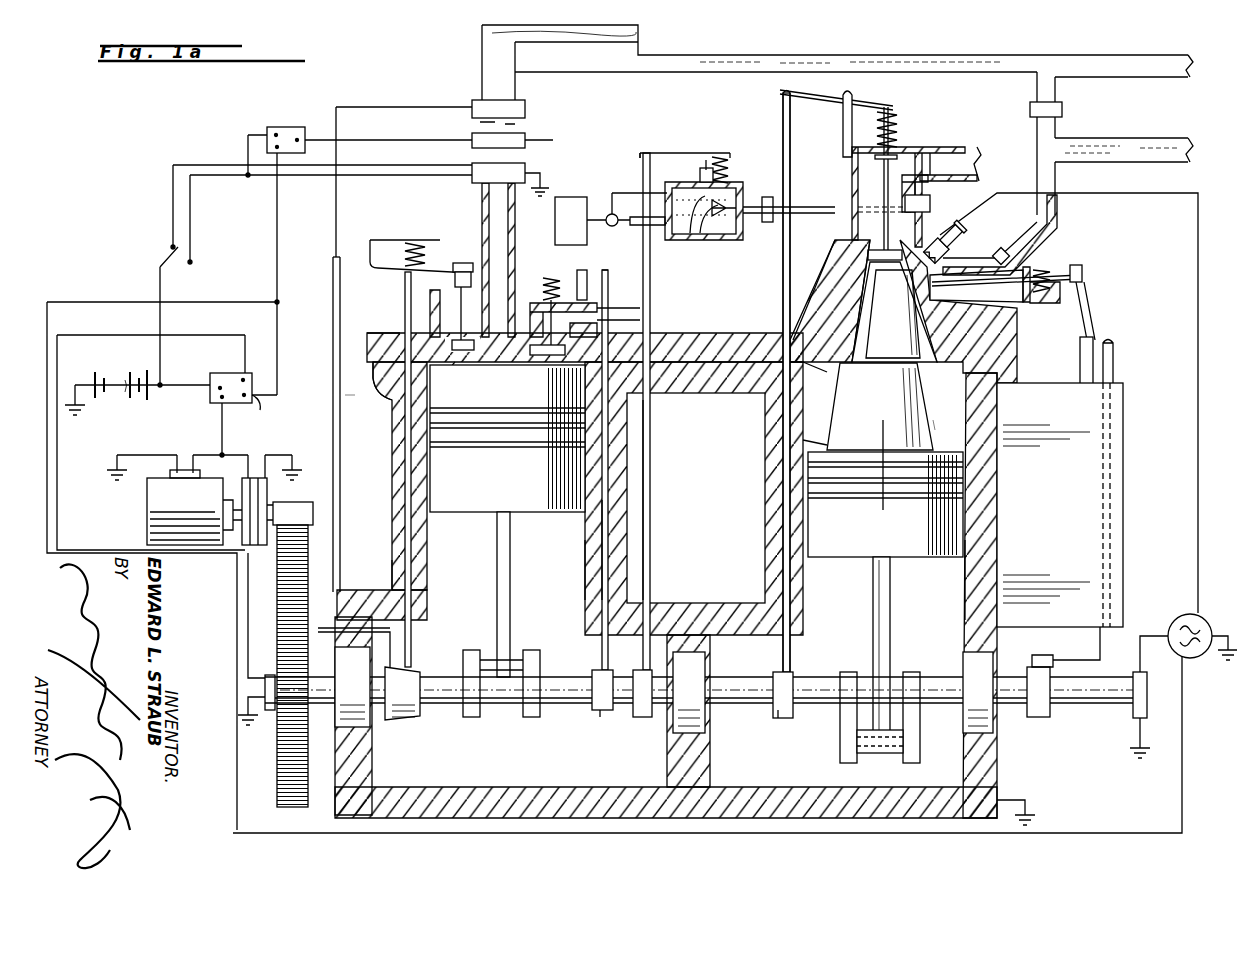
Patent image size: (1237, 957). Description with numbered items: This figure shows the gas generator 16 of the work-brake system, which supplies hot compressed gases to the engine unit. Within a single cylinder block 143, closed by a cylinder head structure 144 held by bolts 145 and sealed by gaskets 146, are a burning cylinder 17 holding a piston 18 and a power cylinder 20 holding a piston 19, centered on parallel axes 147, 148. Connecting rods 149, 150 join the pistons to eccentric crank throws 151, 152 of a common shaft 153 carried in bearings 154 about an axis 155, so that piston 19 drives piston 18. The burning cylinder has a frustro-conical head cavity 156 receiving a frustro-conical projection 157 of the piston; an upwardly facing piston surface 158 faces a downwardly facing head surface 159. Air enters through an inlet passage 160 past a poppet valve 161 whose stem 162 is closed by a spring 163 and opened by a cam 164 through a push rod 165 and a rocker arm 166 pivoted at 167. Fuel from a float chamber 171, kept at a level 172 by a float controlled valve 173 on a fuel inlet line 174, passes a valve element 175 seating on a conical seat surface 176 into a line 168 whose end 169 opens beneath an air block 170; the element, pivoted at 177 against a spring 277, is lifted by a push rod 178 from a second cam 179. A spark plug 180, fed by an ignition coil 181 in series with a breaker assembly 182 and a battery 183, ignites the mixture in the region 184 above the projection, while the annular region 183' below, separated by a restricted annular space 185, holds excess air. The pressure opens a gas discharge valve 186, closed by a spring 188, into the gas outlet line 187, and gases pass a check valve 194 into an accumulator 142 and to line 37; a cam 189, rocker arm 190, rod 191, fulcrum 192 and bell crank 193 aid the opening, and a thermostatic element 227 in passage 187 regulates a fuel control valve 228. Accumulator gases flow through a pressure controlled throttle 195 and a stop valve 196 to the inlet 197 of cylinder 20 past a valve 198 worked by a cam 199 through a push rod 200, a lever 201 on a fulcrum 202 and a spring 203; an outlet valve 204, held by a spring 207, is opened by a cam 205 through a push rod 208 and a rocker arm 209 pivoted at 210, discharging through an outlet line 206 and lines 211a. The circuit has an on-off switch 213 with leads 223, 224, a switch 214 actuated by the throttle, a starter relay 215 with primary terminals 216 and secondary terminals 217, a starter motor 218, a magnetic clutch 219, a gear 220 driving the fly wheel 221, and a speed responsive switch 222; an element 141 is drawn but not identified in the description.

The gas generator 16 is at (442, 76).
The burning cylinder 17 is at (962, 585).
The piston 18 is at (893, 544).
The piston 19 is at (517, 494).
The power cylinder 20 is at (583, 568).
The line 37 is at (1157, 140).
The air supply pipe 141 is at (1130, 78).
The accumulator 142 is at (640, 32).
The cylinder block 143 is at (392, 528).
The cylinder head structure 144 is at (372, 358).
The bolts 145 is at (367, 332).
The gaskets 146 is at (390, 385).
The axis 147 is at (883, 513).
The axis 148 is at (505, 399).
The connecting rod 149 is at (891, 616).
The connecting rod 150 is at (512, 617).
The eccentric crank throw 151 is at (876, 757).
The eccentric crank throw 152 is at (522, 655).
The common shaft 153 is at (575, 705).
The bearings 154 is at (380, 730).
The axis 155 is at (806, 720).
The head cavity 156 is at (838, 284).
The frustro-conical projection 157 is at (890, 405).
The annular upwardly facing surface 158 is at (828, 447).
The annular transverse head surface 159 is at (810, 388).
The inlet passage 160 is at (970, 158).
The poppet valve 161 is at (845, 248).
The stem 162 is at (872, 190).
The spring 163 is at (900, 127).
The cam 164 is at (784, 720).
The push rod 165 is at (782, 656).
The rocker arm 166 is at (833, 110).
The pivot 167 is at (860, 97).
The line 168 is at (756, 222).
The end 169 is at (930, 192).
The air block 170 is at (915, 175).
The fuel float chamber 171 is at (690, 243).
The level 172 is at (734, 175).
The float controlled valve 173 is at (612, 227).
The fuel inlet line 174 is at (590, 205).
The valve element 175 is at (720, 225).
The valve seat surface 176 is at (700, 238).
The pivot 177 is at (686, 153).
The push rod 178 is at (651, 497).
The second cam 179 is at (642, 720).
The spark plug 180 is at (950, 240).
The ignition coil 181 is at (1177, 609).
The breaker assembly 182 is at (1133, 728).
The battery 183 is at (137, 399).
The annular region 183' is at (945, 412).
The region 184 is at (905, 339).
The restricted annular space 185 is at (920, 360).
The gas discharge valve 186 is at (930, 300).
The gas outlet line 187 is at (1058, 237).
The spring 188 is at (1058, 268).
The cam 189 is at (1040, 718).
The rocker arm 190 is at (1045, 655).
The rod 191 is at (1110, 368).
The fulcrum 192 is at (1095, 335).
The bell crank 193 is at (1093, 320).
The check valve 194 is at (1063, 116).
The pressure controlled throttle 195 is at (528, 129).
The stop valve 196 is at (528, 166).
The inlet 197 is at (460, 372).
The valve 198 is at (465, 338).
The cam 199 is at (418, 722).
The push rod 200 is at (403, 575).
The lever 201 is at (457, 265).
The fixed fulcrum point 202 is at (370, 245).
The spring 203 is at (420, 240).
The outlet valve 204 is at (548, 357).
The cam 205 is at (604, 715).
The outlet line 206 is at (543, 300).
The spring 207 is at (588, 265).
The push rod 208 is at (602, 568).
The rocker arm 209 is at (608, 278).
The pivot 210 is at (643, 275).
The lines 211a is at (597, 320).
The on-off switch 213 is at (158, 262).
The switch 214 is at (288, 126).
The starter relay 215 is at (228, 372).
The primary terminals 216 is at (258, 408).
The secondary terminals 217 is at (218, 420).
The starter motor 218 is at (196, 508).
The magnetic clutch 219 is at (247, 548).
The gear 220 is at (298, 510).
The fly wheel 221 is at (285, 638).
The switch 222 is at (270, 712).
The lead 223 is at (226, 156).
The lead 224 is at (236, 176).
The thermostatic element 227 is at (1005, 250).
The fuel control valve 228 is at (768, 197).
The spring 277 is at (726, 160).